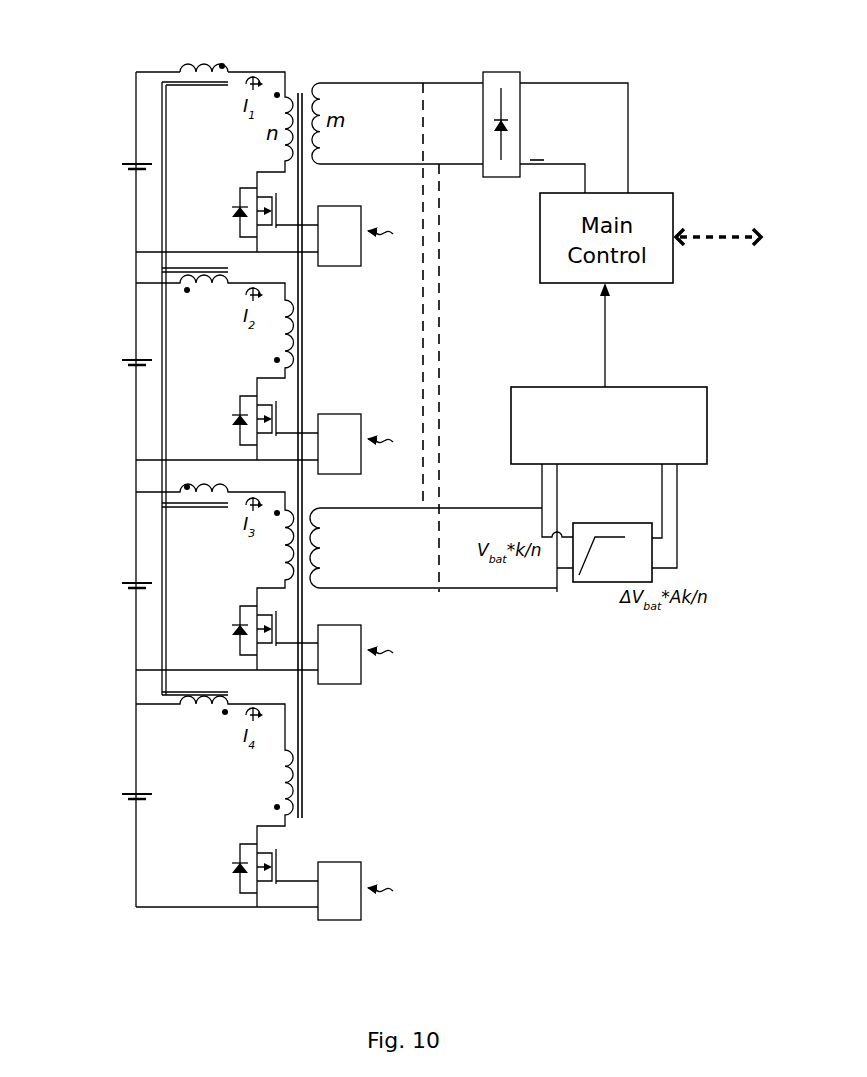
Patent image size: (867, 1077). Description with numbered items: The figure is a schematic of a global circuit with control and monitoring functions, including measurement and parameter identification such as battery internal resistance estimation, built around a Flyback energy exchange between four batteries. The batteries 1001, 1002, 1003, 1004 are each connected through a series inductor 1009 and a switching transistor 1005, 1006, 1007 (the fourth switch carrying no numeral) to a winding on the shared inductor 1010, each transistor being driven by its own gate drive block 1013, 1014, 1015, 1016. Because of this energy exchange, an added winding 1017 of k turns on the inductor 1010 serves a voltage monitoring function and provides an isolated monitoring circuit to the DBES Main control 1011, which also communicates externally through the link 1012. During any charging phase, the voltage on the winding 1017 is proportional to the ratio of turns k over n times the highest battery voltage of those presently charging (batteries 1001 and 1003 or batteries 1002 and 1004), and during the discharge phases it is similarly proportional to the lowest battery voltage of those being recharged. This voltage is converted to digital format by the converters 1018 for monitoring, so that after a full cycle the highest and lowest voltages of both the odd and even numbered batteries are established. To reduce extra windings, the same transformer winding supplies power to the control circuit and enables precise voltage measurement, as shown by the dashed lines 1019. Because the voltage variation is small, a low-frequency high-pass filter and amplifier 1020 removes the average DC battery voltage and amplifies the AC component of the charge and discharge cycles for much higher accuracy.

The battery 1001 is at (113, 165).
The battery 1002 is at (113, 361).
The battery 1003 is at (113, 584).
The battery 1004 is at (113, 795).
The switching transistor 1005 is at (241, 178).
The switching transistor 1006 is at (237, 388).
The switching transistor 1007 is at (248, 596).
The inductor 1009 is at (173, 73).
The inductor 1010 is at (303, 68).
The DBES Main control 1011 is at (617, 187).
The communication link 1012 is at (719, 200).
The gate driver 1013 is at (343, 270).
The gate driver 1014 is at (345, 412).
The gate driver 1015 is at (343, 688).
The gate driver 1016 is at (348, 858).
The added winding 1017 is at (328, 573).
The converters 1018 is at (647, 380).
The dashed lines 1019 is at (447, 351).
The low-frequency high-pass filter and amplifier 1020 is at (593, 591).